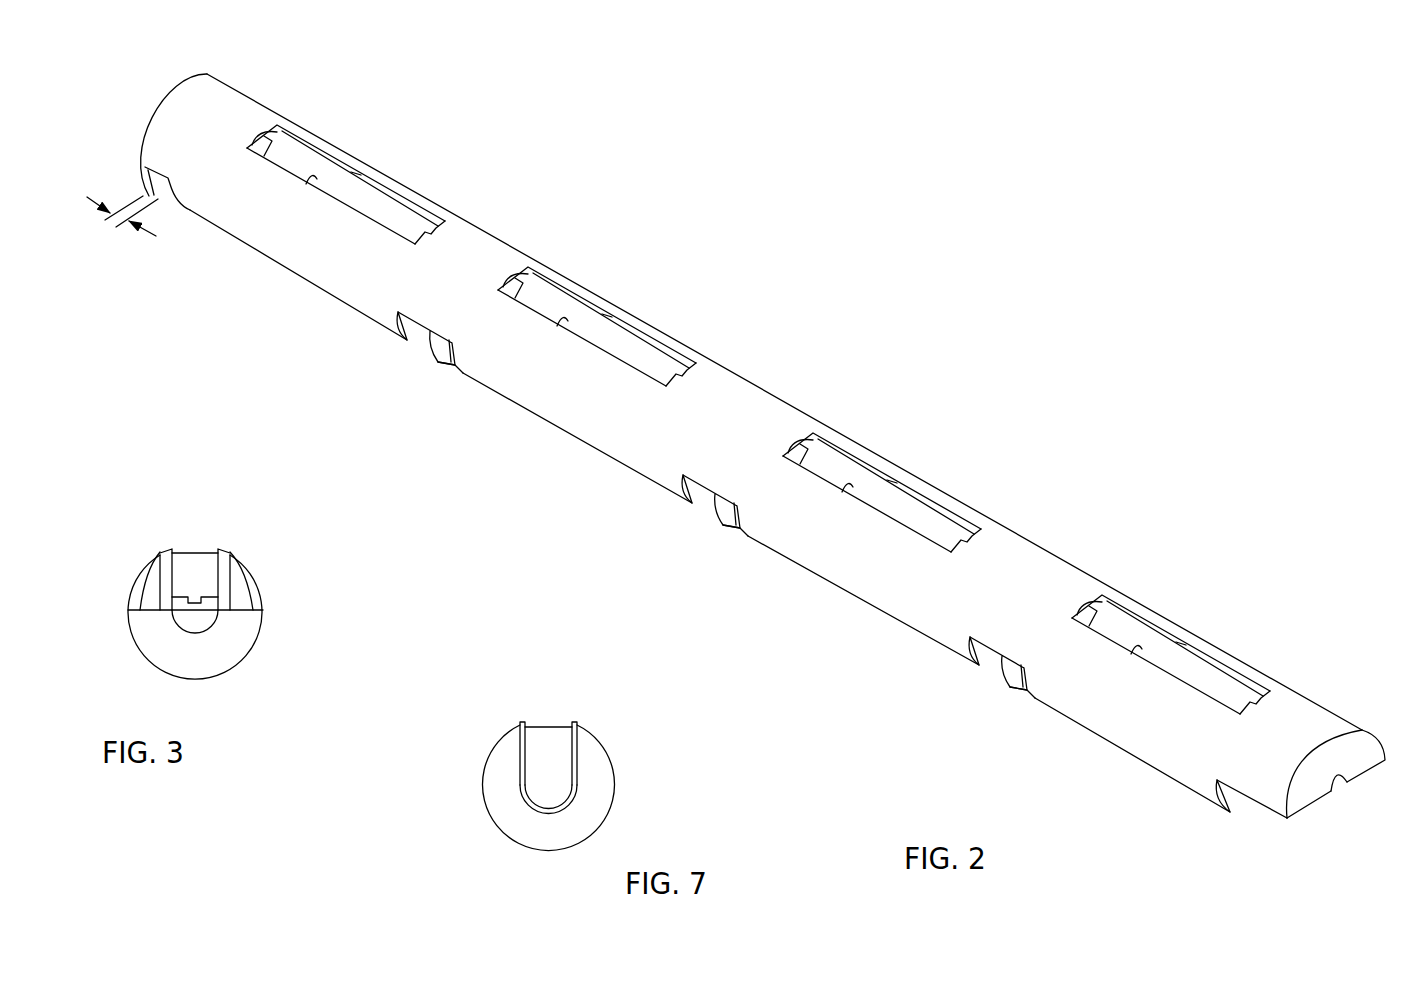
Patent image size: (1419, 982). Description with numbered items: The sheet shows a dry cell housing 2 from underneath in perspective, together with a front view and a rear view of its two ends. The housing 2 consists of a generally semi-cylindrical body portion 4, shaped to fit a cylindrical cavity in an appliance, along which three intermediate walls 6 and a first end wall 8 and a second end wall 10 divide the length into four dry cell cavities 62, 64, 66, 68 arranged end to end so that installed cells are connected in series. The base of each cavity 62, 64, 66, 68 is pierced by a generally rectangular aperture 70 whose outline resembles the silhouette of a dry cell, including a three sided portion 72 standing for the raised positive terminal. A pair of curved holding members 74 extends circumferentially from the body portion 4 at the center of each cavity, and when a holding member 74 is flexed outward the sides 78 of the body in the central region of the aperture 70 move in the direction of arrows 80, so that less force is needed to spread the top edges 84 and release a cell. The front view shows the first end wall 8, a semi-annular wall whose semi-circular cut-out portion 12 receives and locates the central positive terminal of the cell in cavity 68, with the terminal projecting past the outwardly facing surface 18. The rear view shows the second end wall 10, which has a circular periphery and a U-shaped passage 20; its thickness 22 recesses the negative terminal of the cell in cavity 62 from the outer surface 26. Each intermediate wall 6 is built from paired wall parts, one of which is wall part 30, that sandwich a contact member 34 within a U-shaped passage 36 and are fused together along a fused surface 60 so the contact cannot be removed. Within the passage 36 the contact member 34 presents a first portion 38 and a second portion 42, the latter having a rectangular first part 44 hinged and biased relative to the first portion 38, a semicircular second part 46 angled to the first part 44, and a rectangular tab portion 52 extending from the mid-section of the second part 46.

In FIG. 2, the housing 2 is at (1068, 282).
In FIG. 3, the housing 2 is at (300, 676).
In FIG. 7, the housing 2 is at (641, 741).
In FIG. 2, the body portion 4 is at (467, 223).
In FIG. 3, the body portion 4 is at (250, 655).
In FIG. 7, the body portion 4 is at (482, 799).
In FIG. 2, the intermediate wall 6 is at (445, 365).
In FIG. 3, the intermediate wall 6 is at (252, 588).
In FIG. 2, the first end wall 8 is at (1368, 758).
In FIG. 3, the first end wall 8 is at (145, 637).
In FIG. 7, the second end wall 10 is at (500, 762).
In FIG. 2, the semi-circular cut-out portion 12 is at (1340, 787).
In FIG. 3, the semi-circular cut-out portion 12 is at (178, 630).
In FIG. 2, the outwardly facing surface 18 is at (1307, 800).
In FIG. 7, the passage 20 is at (568, 775).
In FIG. 2, the thickness 22 is at (138, 213).
In FIG. 7, the outer surface 26 is at (513, 823).
In FIG. 2, the wall part 30 is at (543, 265).
In FIG. 3, the wall part 30 is at (148, 570).
In FIG. 2, the contact member 34 is at (745, 532).
In FIG. 3, the contact member 34 is at (186, 536).
In FIG. 7, the contact member 34 is at (550, 742).
In FIG. 3, the passage 36 is at (175, 548).
In FIG. 7, the passage 36 is at (527, 743).
In FIG. 7, the first portion 38 is at (557, 763).
In FIG. 2, the second portion 42 is at (458, 368).
In FIG. 3, the second portion 42 is at (204, 550).
In FIG. 3, the first part 44 is at (212, 571).
In FIG. 3, the second part 46 is at (148, 598).
In FIG. 3, the tab portion 52 is at (202, 613).
In FIG. 2, the fused surface 60 is at (427, 350).
In FIG. 2, the dry cell cavity 62 is at (307, 148).
In FIG. 2, the dry cell cavity 64 is at (558, 290).
In FIG. 2, the dry cell cavity 66 is at (843, 456).
In FIG. 2, the dry cell cavity 68 is at (1132, 618).
In FIG. 2, the aperture 70 is at (320, 165).
In FIG. 2, the three sided portion 72 is at (434, 216).
In FIG. 2, the holding member 74 is at (283, 260).
In FIG. 2, the sides 78 is at (350, 172).
In FIG. 2, the arrows 80 is at (369, 189).
In FIG. 2, the top edges 84 is at (372, 325).